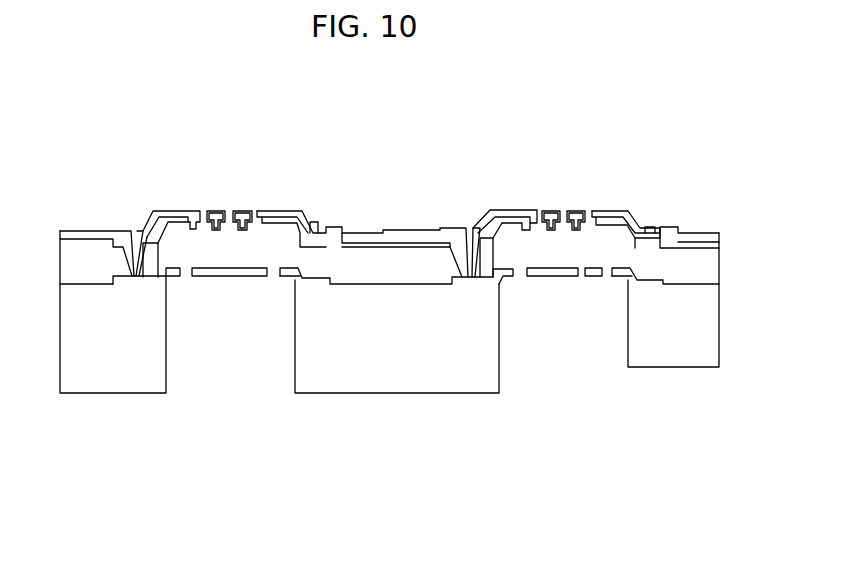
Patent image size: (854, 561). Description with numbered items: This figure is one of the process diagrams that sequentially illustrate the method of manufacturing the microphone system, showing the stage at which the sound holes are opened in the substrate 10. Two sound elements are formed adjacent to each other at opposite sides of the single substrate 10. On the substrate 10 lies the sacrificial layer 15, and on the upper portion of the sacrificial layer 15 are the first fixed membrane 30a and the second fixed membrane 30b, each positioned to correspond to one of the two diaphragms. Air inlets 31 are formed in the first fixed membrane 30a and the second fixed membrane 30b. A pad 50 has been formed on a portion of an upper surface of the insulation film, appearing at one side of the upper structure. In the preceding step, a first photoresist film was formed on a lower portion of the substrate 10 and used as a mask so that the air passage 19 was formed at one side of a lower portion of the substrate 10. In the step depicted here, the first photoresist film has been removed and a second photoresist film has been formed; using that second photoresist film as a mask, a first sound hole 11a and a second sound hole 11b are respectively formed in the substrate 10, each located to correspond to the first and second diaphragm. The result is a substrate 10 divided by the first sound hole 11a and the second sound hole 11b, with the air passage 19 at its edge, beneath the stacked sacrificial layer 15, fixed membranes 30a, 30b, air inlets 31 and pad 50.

The substrate 10 is at (72, 340).
The first sound hole 11a is at (232, 345).
The second sound hole 11b is at (571, 345).
The sacrificial layer 15 is at (72, 276).
The air passage 19 is at (677, 381).
The first fixed membrane 30a is at (277, 220).
The second fixed membrane 30b is at (613, 222).
The air inlets 31 is at (204, 210).
The pad 50 is at (83, 236).